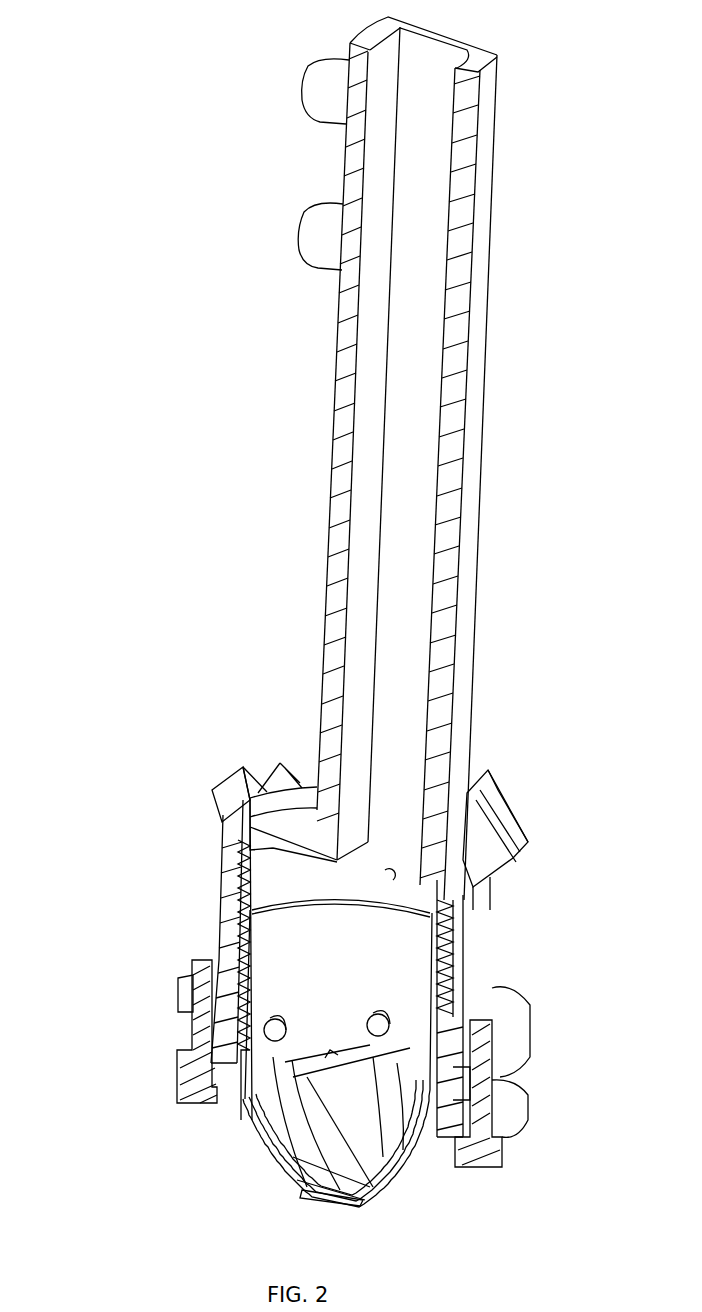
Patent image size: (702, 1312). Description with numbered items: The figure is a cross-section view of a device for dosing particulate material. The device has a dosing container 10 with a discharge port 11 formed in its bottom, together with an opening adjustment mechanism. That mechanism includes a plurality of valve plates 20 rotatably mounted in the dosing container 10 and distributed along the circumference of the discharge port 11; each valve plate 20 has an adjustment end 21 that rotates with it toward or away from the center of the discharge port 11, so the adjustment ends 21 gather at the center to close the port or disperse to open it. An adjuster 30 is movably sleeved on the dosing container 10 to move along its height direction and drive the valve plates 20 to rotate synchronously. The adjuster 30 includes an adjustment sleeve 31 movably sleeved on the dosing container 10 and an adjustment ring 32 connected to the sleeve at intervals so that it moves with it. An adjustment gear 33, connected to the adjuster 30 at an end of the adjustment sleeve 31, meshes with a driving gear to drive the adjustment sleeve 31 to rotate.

The dosing container 10 is at (443, 682).
The discharge port 11 is at (333, 1195).
The valve plate 20 is at (373, 1140).
The adjustment end 21 is at (407, 1187).
The adjuster 30 is at (108, 880).
The adjustment sleeve 31 is at (220, 933).
The adjustment ring 32 is at (176, 1066).
The adjustment gear 33 is at (220, 810).